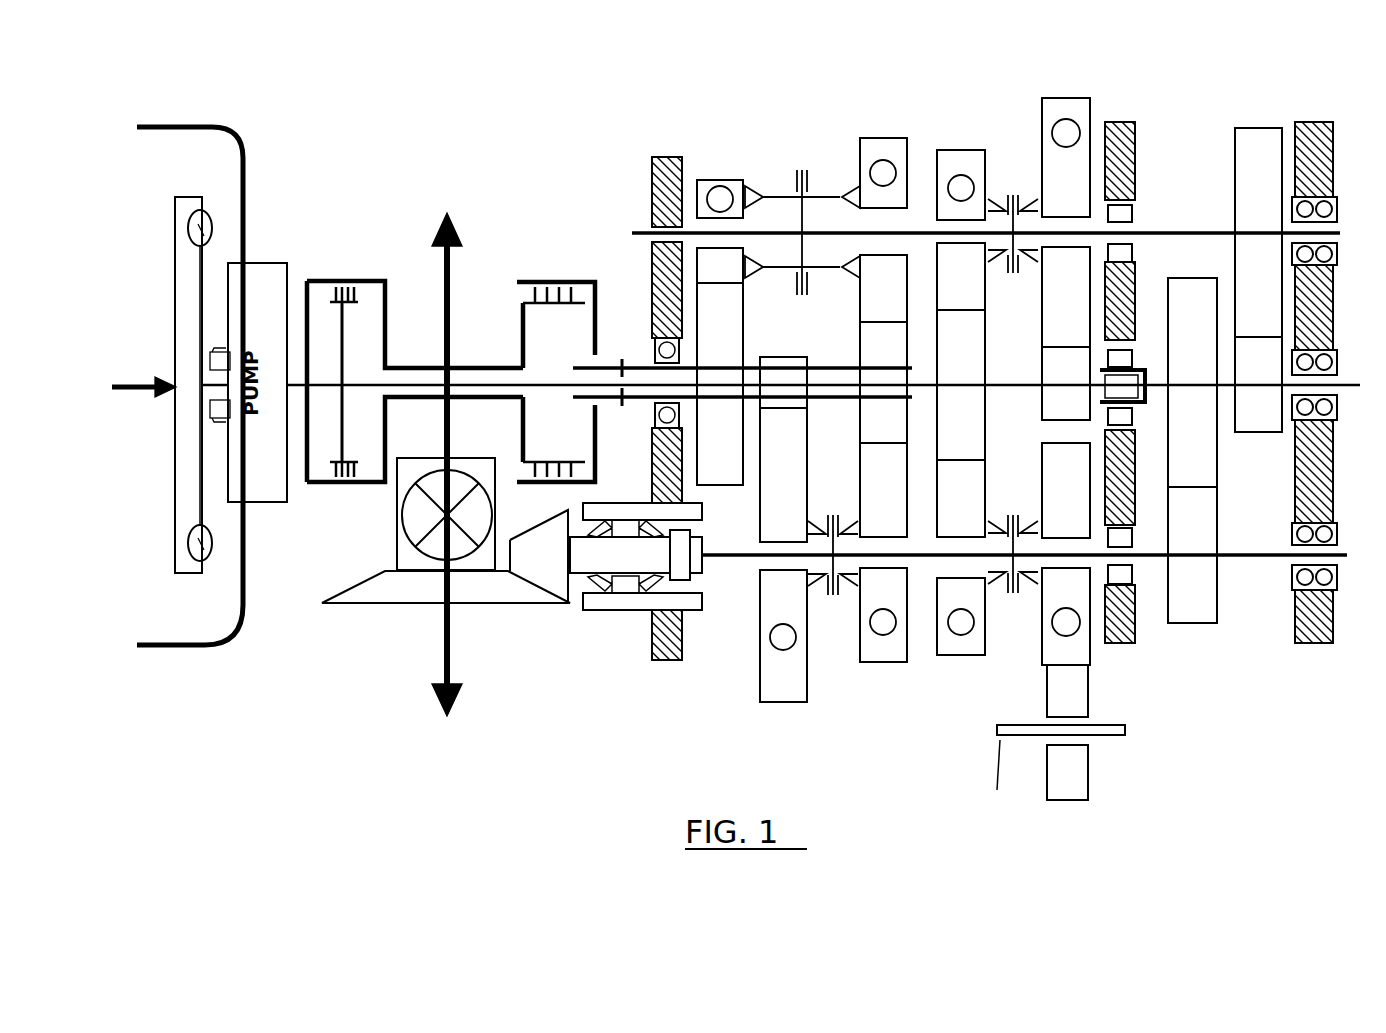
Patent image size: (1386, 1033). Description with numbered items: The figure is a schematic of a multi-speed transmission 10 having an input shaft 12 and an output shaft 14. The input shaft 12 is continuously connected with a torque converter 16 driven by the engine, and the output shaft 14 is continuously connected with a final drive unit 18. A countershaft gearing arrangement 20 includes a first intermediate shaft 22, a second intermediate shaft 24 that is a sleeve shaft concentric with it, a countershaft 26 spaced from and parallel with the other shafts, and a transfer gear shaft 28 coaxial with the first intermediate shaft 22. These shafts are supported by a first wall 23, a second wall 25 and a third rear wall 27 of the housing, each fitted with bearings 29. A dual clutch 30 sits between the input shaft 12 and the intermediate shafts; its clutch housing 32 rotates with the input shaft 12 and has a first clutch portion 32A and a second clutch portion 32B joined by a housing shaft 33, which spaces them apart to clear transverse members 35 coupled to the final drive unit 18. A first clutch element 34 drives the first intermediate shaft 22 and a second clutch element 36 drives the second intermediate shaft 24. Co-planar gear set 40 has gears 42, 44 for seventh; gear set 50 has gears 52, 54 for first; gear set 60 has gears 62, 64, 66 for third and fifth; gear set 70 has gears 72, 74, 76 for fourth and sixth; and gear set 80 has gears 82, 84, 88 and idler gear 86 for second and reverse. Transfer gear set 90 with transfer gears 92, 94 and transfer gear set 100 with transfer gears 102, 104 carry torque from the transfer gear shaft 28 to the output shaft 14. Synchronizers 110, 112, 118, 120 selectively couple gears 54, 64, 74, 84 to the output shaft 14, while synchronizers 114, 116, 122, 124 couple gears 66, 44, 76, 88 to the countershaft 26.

The multi-speed transmission 10 is at (288, 121).
The input member 12 is at (292, 393).
The output member 14 is at (736, 553).
The torque converter 16 is at (174, 488).
The final drive unit 18 is at (594, 618).
The countershaft gearing arrangement 20 is at (1151, 186).
The first intermediate shaft 22 is at (641, 382).
The first support wall 23 is at (661, 663).
The second intermediate shaft 24 is at (840, 400).
The second support wall 25 is at (1116, 646).
The countershaft 26 is at (1216, 231).
The third support wall 27 is at (1310, 645).
The transfer gear shaft 28 is at (1226, 390).
The bearings 29 is at (655, 338).
The dual clutch 30 is at (404, 227).
The clutch housing 32 is at (358, 489).
The first clutch portion 32A is at (344, 280).
The second clutch portion 32B is at (520, 335).
The housing shaft 33 is at (478, 400).
The first clutch element 34 is at (345, 345).
The transverse extending members 35 is at (442, 660).
The second clutch element 36 is at (560, 282).
The gear set 40 is at (712, 152).
The gear 42 is at (707, 456).
The gear 44 is at (707, 280).
The gear set 50 is at (790, 712).
The gear 52 is at (784, 357).
The gear 54 is at (770, 604).
The gear set 60 is at (893, 126).
The gear 62 is at (870, 357).
The gear 64 is at (870, 509).
The gear 66 is at (870, 304).
The gear set 70 is at (955, 670).
The gear 72 is at (948, 361).
The gear 74 is at (948, 509).
The gear 76 is at (948, 291).
The gear set 80 is at (1082, 90).
The gear 82 is at (1053, 379).
The gear 84 is at (1053, 502).
The idler gear 86 is at (1053, 784).
The gear 88 is at (1053, 199).
The transfer gear set 90 is at (1190, 630).
The transfer gear 92 is at (1179, 320).
The transfer gear 94 is at (1179, 527).
The transfer gear set 100 is at (1266, 110).
The transfer gear 102 is at (1242, 420).
The transfer gear 104 is at (1242, 168).
The synchronizer 110 is at (816, 587).
The synchronizer 112 is at (852, 524).
The synchronizer 114 is at (816, 280).
The synchronizer 116 is at (755, 185).
The synchronizer 118 is at (996, 583).
The synchronizer 120 is at (1030, 523).
The synchronizer 122 is at (995, 265).
The synchronizer 124 is at (1030, 200).